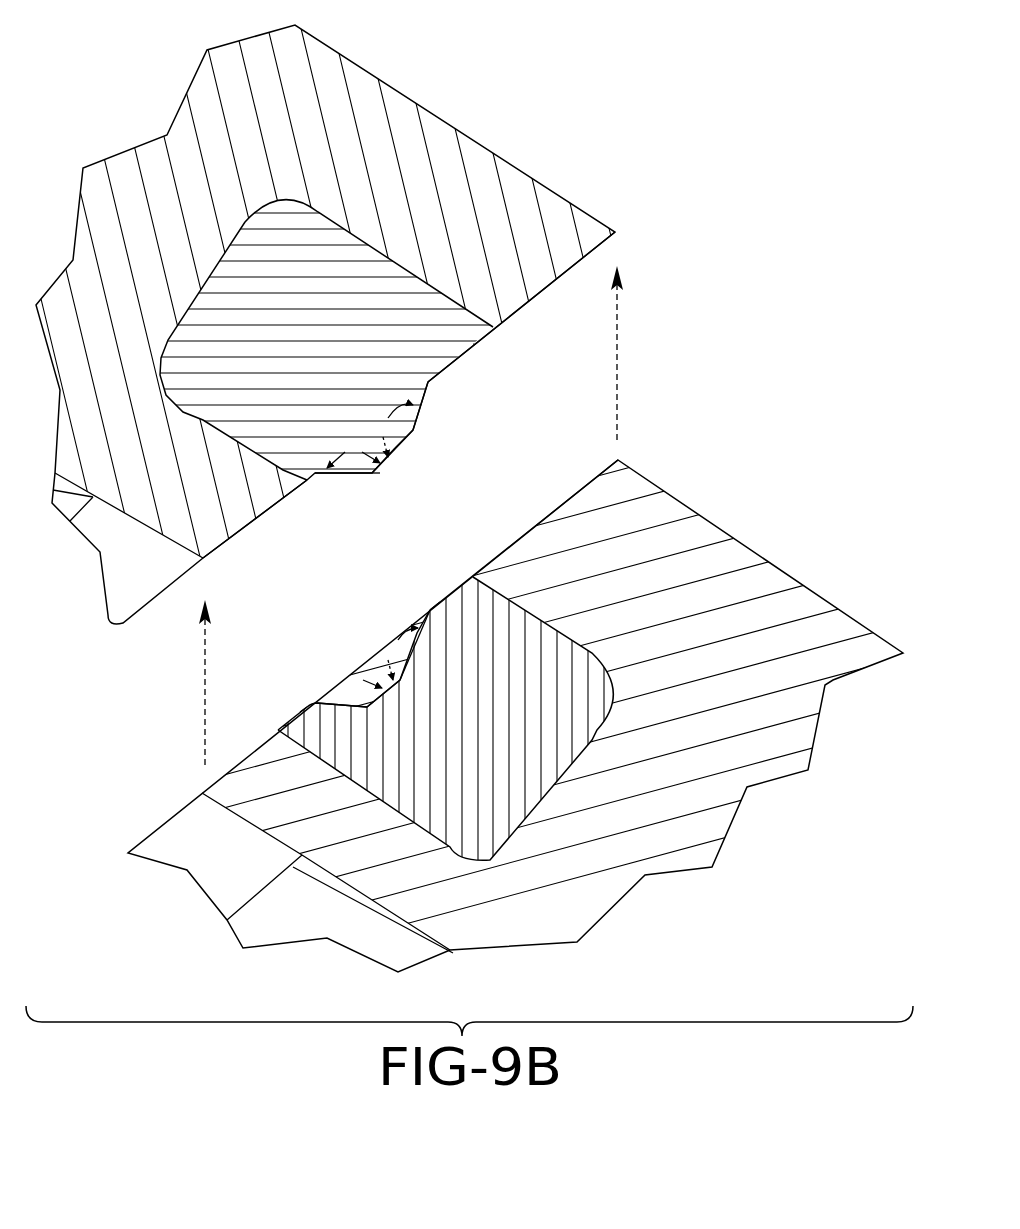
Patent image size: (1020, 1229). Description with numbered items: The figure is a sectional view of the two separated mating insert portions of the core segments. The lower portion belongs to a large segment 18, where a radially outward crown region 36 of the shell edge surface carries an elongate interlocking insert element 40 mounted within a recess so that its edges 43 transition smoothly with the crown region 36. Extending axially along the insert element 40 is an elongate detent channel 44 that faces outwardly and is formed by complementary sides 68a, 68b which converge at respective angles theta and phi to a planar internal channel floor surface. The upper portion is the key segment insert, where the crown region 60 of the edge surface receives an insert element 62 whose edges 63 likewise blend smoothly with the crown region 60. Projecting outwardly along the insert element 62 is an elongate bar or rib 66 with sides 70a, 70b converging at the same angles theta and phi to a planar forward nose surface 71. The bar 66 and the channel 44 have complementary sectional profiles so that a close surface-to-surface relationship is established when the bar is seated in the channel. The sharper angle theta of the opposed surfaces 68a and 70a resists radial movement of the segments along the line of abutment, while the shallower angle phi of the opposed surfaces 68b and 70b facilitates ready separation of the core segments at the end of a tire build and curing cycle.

The large segment 18 is at (520, 662).
The crown region 36 is at (503, 550).
The interlocking insert element 40 is at (530, 733).
The edges 43 is at (445, 595).
The detent channel 44 is at (392, 688).
The crown region 60 is at (540, 292).
The interlocking insert element 62 is at (425, 389).
The edges 63 is at (465, 355).
The bar or rib 66 is at (400, 440).
The channel side 68a is at (328, 700).
The channel side 68b is at (423, 622).
The bar side 70a is at (337, 473).
The bar side 70b is at (412, 427).
The forward nose surface 71 is at (372, 473).